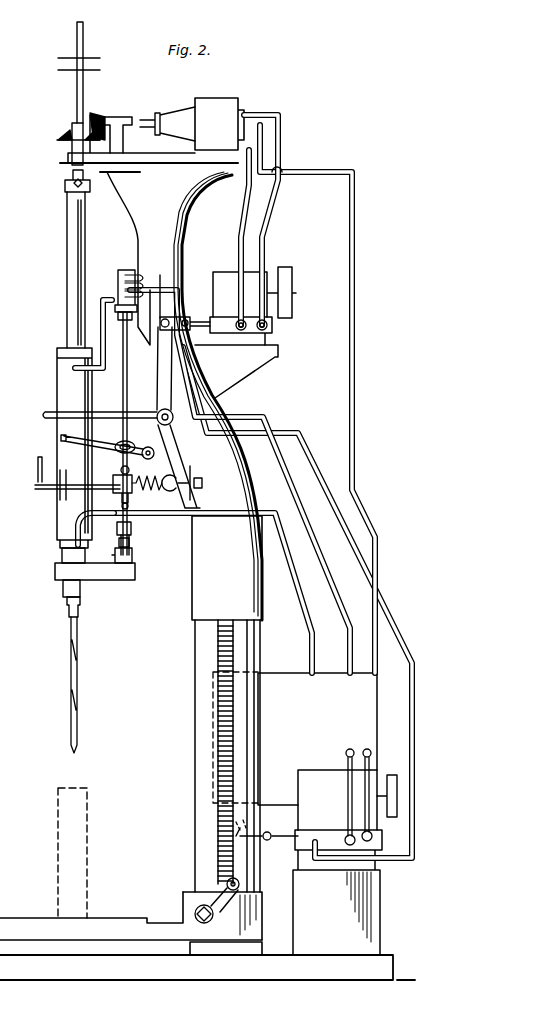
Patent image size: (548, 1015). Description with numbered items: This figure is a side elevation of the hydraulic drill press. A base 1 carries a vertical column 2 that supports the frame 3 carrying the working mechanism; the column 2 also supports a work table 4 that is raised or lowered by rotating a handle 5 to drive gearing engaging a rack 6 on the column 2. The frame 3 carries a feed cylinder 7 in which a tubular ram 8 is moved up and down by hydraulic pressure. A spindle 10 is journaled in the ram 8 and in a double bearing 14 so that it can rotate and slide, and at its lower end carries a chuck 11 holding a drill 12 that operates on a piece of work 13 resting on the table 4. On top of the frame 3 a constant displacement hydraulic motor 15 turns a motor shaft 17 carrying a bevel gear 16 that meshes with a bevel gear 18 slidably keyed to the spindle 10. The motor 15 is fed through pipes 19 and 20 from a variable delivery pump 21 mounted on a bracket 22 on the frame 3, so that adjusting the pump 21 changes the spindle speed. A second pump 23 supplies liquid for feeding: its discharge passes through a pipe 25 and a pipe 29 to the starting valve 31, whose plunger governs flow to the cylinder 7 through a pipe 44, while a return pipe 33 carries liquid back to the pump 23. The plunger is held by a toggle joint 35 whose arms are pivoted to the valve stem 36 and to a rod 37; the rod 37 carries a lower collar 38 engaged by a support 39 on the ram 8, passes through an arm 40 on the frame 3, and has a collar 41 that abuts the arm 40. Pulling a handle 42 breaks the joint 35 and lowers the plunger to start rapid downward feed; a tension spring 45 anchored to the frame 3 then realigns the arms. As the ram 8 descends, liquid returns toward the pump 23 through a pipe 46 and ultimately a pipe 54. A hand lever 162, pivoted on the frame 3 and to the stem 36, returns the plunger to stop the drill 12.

The base 1 is at (207, 967).
The vertical column 2 is at (233, 662).
The frame 3 is at (161, 391).
The work table 4 is at (131, 923).
The handle 5 is at (220, 898).
The rack 6 is at (218, 703).
The feed cylinder 7 is at (74, 448).
The tubular ram 8 is at (62, 552).
The spindle 10 is at (78, 93).
The chuck 11 is at (68, 612).
The drill 12 is at (72, 673).
The piece of work 13 is at (58, 838).
The double bearing 14 is at (160, 160).
The hydraulic motor 15 is at (257, 385).
The bevel gear 16 is at (102, 113).
The motor shaft 17 is at (144, 120).
The bevel gear 18 is at (60, 137).
The pipe 19 is at (243, 226).
The pipe 20 is at (279, 218).
The variable delivery pump 21 is at (222, 288).
The bracket 22 is at (236, 371).
The pump 23 is at (327, 751).
The pipe 25 is at (369, 766).
The pipe 29 is at (167, 292).
The starting valve 31 is at (120, 272).
The return pipe 33 is at (410, 716).
The toggle joint 35 is at (121, 470).
The valve stem 36 is at (123, 398).
The rod 37 is at (121, 545).
The collar 38 is at (134, 560).
The support 39 is at (95, 572).
The arm 40 is at (129, 525).
The collar 41 is at (129, 539).
The handle 42 is at (35, 478).
The pipe 44 is at (112, 300).
The tension spring 45 is at (145, 484).
The pipe 46 is at (302, 607).
The pipe 54 is at (348, 763).
The hand lever 162 is at (60, 438).